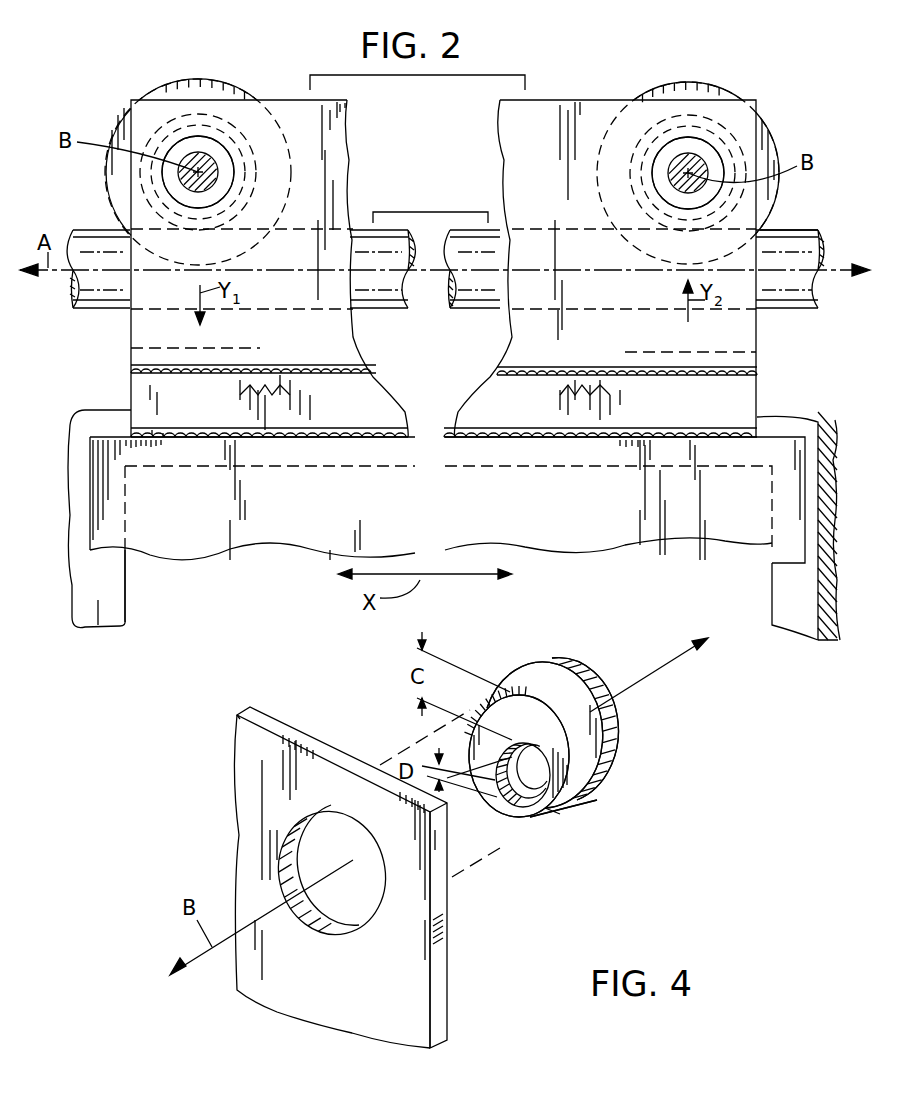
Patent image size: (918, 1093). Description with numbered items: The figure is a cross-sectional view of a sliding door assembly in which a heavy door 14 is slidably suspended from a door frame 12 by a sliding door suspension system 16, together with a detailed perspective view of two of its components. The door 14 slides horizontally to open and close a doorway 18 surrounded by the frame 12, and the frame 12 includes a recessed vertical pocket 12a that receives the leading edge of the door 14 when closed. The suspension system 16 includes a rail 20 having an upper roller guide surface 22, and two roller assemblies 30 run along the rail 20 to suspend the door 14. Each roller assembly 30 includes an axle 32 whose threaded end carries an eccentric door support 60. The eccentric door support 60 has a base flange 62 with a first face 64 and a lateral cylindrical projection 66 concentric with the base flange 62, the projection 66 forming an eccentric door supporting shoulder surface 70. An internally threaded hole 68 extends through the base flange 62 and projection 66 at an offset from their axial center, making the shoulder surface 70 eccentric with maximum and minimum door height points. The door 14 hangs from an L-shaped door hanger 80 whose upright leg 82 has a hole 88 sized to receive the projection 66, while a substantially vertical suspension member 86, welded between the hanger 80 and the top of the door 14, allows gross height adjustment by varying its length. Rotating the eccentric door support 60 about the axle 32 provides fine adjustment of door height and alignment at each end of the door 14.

In FIG. 2, the door frame 12 is at (98, 623).
In FIG. 2, the recessed vertical pocket 12a is at (818, 603).
In FIG. 2, the heavy door 14 is at (300, 524).
In FIG. 2, the sliding door suspension system 16 is at (107, 118).
In FIG. 2, the doorway 18 is at (128, 575).
In FIG. 2, the rail 20 is at (788, 287).
In FIG. 2, the upper roller guide surface 22 is at (797, 230).
In FIG. 2, the roller assembly 30 is at (172, 60).
In FIG. 2, the axle 32 is at (785, 68).
In FIG. 2, the eccentric door support 60 is at (798, 133).
In FIG. 4, the eccentric door support 60 is at (628, 855).
In FIG. 4, the base flange 62 is at (582, 675).
In FIG. 4, the base flange first face 64 is at (602, 735).
In FIG. 4, the lateral cylindrical projection 66 is at (566, 778).
In FIG. 4, the internally threaded hole 68 is at (528, 818).
In FIG. 2, the eccentric door supporting shoulder surface 70 is at (207, 132).
In FIG. 4, the eccentric door supporting shoulder surface 70 is at (573, 725).
In FIG. 2, the L-shaped door hanger 80 is at (128, 339).
In FIG. 4, the L-shaped door hanger 80 is at (175, 810).
In FIG. 4, the upright leg 82 is at (440, 988).
In FIG. 2, the suspension member 86 is at (137, 390).
In FIG. 4, the hole 88 is at (288, 845).